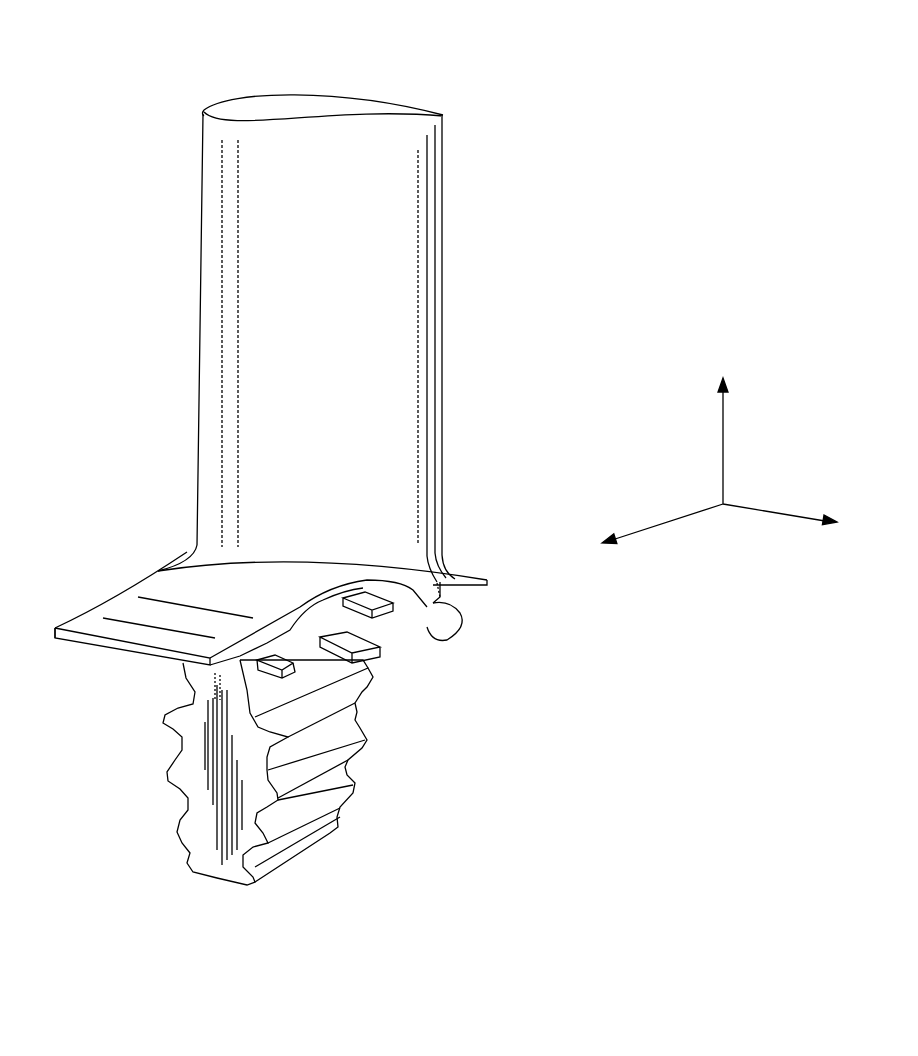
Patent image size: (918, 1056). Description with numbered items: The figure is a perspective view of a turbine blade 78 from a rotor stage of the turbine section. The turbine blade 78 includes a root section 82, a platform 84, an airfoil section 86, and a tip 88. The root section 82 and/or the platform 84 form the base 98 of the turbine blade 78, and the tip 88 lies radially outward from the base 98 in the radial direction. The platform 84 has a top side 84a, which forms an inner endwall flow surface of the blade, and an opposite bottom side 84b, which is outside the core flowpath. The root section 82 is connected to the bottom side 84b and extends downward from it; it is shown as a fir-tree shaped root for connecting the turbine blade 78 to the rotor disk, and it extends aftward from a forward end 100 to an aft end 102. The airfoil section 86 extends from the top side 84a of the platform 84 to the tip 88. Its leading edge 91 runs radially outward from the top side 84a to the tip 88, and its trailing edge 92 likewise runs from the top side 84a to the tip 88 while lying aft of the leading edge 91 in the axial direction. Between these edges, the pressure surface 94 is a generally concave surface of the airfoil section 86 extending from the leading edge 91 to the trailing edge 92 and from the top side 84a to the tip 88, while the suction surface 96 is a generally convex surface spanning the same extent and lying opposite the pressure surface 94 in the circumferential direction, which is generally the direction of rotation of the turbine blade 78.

The turbine blade 78 is at (160, 281).
The root section 82 is at (205, 776).
The platform 84 is at (330, 577).
The top side of platform 84a is at (124, 604).
The bottom side of platform 84b is at (477, 597).
The airfoil section 86 is at (316, 293).
The tip 88 is at (227, 100).
The leading edge 91 is at (199, 310).
The trailing edge 92 is at (447, 263).
The pressure surface 94 is at (388, 432).
The suction surface 96 is at (374, 82).
The base 98 is at (72, 594).
The forward end 100 is at (197, 818).
The aft end 102 is at (346, 768).